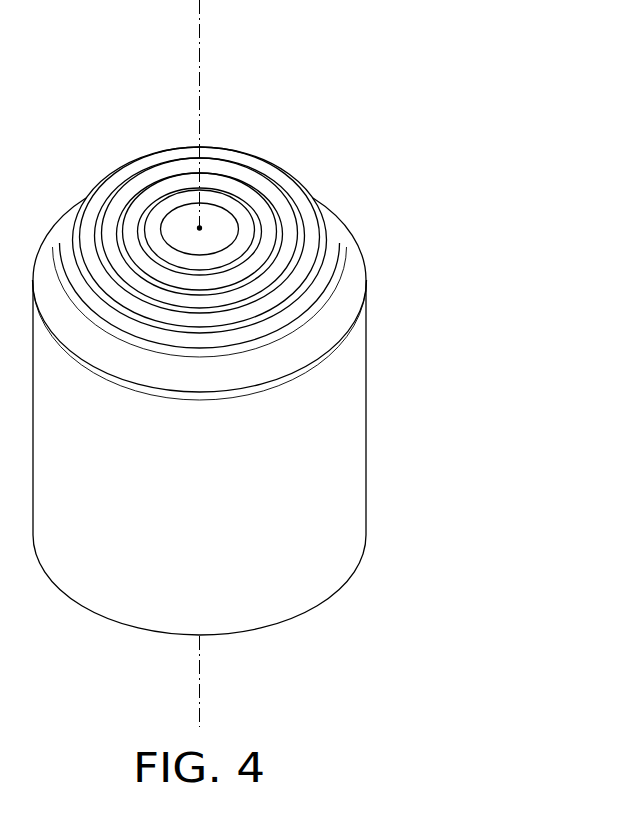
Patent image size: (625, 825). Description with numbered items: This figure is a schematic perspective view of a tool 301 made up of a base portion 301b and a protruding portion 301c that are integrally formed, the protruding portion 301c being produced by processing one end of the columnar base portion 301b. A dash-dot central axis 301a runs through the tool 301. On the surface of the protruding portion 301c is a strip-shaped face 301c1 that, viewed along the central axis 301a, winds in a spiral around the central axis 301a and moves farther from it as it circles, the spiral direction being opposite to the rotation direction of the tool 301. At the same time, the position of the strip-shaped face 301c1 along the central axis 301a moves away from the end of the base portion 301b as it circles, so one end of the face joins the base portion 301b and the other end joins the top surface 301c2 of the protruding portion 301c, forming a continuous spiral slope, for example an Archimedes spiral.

The tool 301 is at (284, 363).
The central axis 301a is at (200, 30).
The base portion 301b is at (305, 460).
The protruding portion 301c is at (283, 237).
The strip-shaped face 301c1 is at (303, 268).
The top surface 301c2 is at (212, 228).